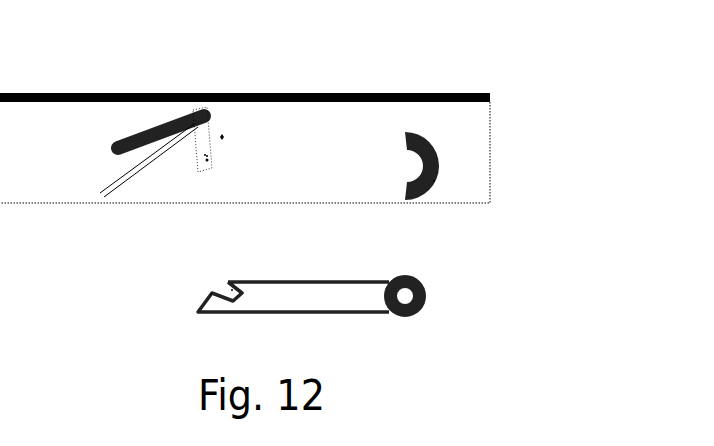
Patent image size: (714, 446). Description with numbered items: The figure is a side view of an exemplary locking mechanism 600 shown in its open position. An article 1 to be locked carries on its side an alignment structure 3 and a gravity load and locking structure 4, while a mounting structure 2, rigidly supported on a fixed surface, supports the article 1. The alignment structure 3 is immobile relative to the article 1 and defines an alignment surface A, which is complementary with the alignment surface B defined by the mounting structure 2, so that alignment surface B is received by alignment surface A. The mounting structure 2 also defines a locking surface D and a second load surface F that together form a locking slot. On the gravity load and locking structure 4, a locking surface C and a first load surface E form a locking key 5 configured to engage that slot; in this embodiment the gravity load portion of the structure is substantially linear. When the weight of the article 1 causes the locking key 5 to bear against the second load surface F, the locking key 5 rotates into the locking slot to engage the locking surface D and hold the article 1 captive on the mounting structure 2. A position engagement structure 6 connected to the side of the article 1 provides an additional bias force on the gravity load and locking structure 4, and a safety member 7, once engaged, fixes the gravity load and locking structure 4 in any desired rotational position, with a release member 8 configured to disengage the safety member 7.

The article 1 is at (324, 96).
The mounting structure 2 is at (364, 262).
The alignment structure 3 is at (432, 160).
The gravity load and locking structure 4 is at (206, 162).
The locking key 5 is at (207, 154).
The position engagement structure 6 is at (207, 154).
The safety member 7 is at (138, 142).
The release member 8 is at (103, 193).
The alignment surface A is at (434, 181).
The alignment surface B is at (427, 292).
The locking surface C is at (205, 155).
The locking surface D is at (232, 290).
The first load surface E is at (207, 156).
The second load surface F is at (211, 294).
The locking mechanism 600 is at (474, 325).